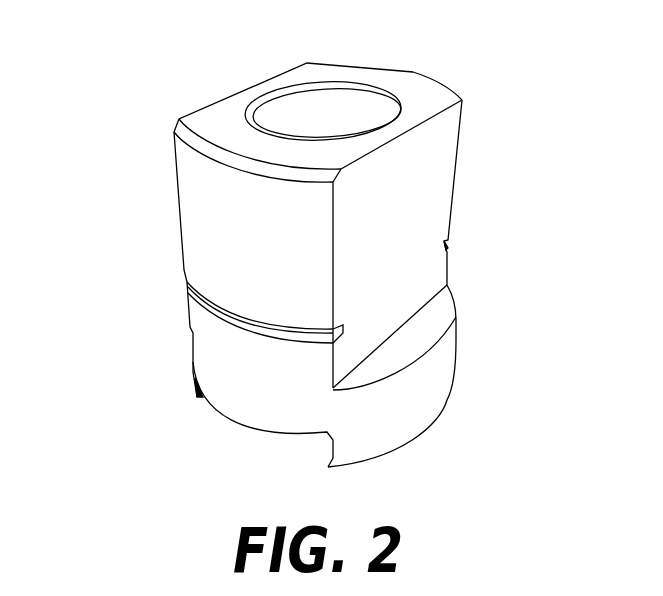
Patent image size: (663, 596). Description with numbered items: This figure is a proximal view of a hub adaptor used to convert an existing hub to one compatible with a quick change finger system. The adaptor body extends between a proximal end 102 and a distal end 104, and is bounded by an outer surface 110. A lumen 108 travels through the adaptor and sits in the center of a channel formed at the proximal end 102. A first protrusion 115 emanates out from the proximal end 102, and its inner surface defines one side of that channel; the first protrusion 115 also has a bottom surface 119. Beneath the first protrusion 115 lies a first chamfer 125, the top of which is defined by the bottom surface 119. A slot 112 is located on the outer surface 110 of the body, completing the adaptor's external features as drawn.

The proximal end 102 is at (262, 396).
The distal end 104 is at (208, 128).
The lumen 108 is at (352, 113).
The outer surface 110 is at (248, 231).
The slot 112 is at (213, 315).
The first protrusion 115 is at (408, 422).
The bottom surface 119 is at (425, 343).
The first chamfer 125 is at (400, 207).